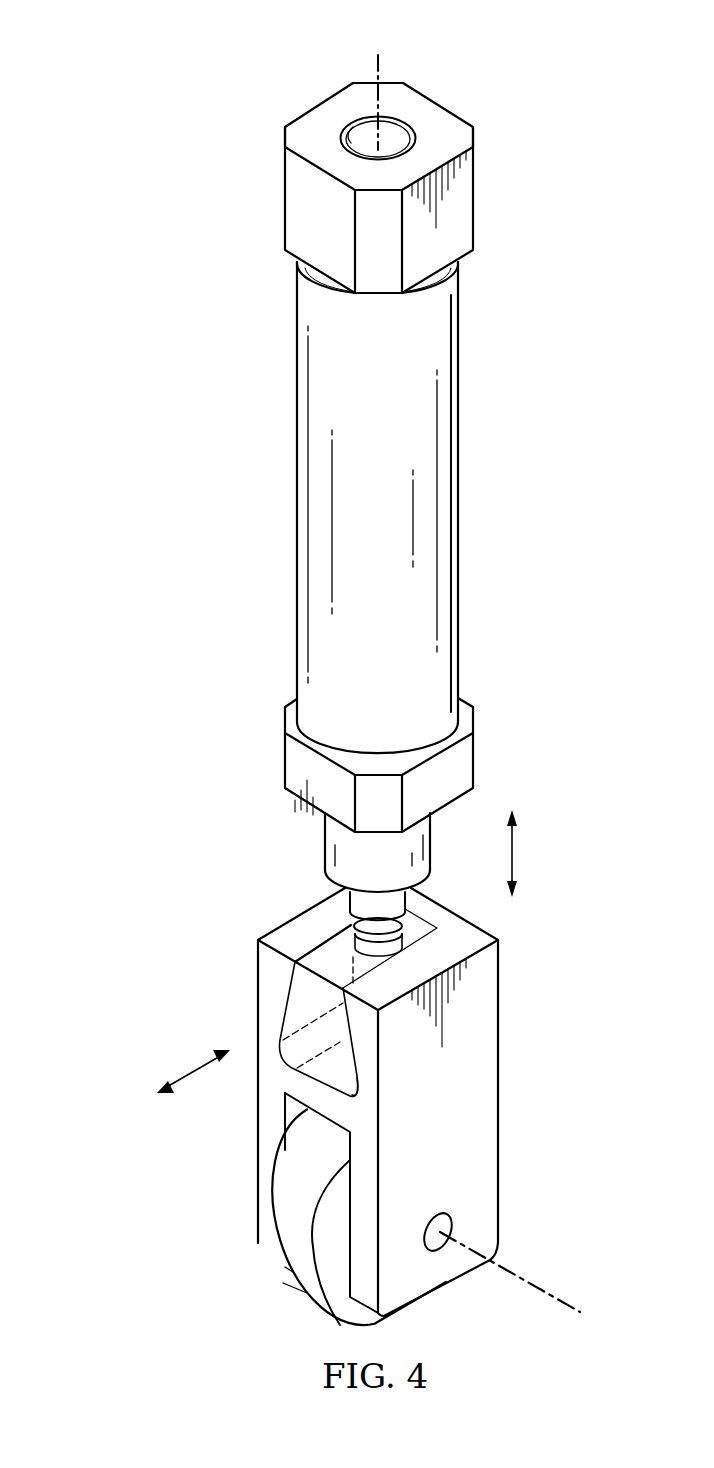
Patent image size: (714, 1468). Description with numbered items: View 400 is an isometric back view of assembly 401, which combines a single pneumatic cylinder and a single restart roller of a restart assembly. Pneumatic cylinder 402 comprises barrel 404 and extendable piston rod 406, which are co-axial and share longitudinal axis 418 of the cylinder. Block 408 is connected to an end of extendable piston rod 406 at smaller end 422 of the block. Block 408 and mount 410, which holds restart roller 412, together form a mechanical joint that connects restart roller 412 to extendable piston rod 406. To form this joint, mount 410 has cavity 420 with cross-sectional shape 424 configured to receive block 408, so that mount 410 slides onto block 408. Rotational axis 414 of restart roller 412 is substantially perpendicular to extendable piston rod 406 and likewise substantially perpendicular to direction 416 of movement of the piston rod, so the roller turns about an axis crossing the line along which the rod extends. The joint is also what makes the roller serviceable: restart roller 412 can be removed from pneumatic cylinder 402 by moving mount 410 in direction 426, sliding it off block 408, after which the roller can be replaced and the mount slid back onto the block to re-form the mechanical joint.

The view 400 is at (86, 70).
The assembly 401 is at (272, 94).
The pneumatic cylinder 402 is at (488, 368).
The barrel 404 is at (297, 478).
The extendable piston rod 406 is at (327, 845).
The block 408 is at (307, 985).
The mount 410 is at (498, 1085).
The restart roller 412 is at (270, 1276).
The rotational axis 414 is at (511, 1260).
The direction of movement 416 is at (515, 852).
The longitudinal axis 418 is at (380, 70).
The cavity 420 is at (278, 1028).
The smaller end 422 is at (313, 945).
The cross-sectional shape 424 is at (337, 1070).
The direction 426 is at (193, 1072).